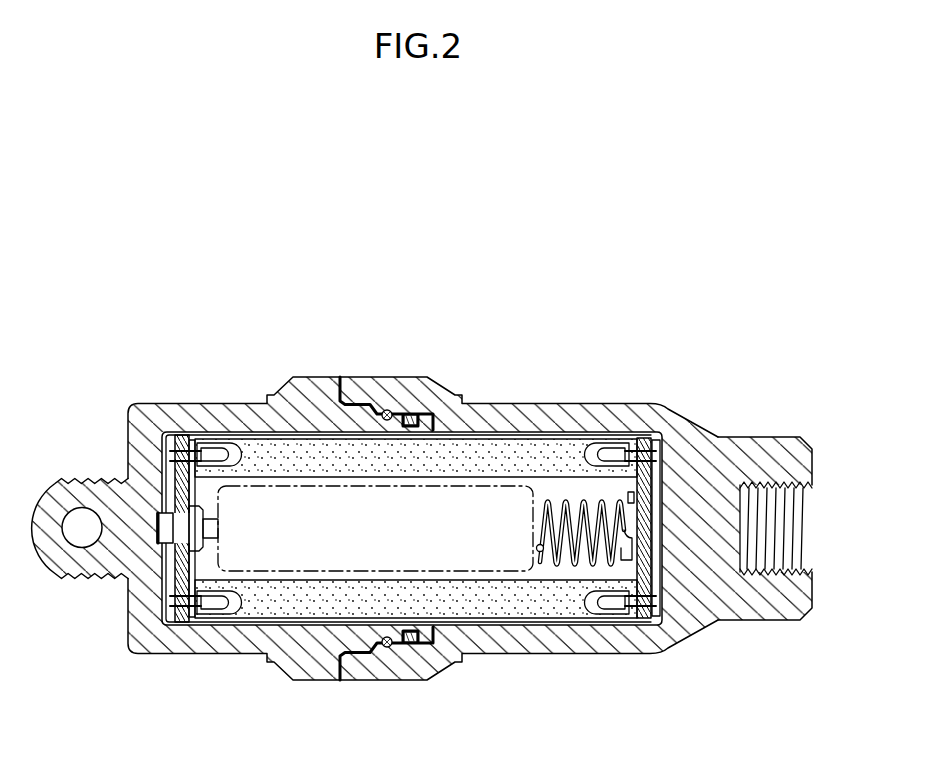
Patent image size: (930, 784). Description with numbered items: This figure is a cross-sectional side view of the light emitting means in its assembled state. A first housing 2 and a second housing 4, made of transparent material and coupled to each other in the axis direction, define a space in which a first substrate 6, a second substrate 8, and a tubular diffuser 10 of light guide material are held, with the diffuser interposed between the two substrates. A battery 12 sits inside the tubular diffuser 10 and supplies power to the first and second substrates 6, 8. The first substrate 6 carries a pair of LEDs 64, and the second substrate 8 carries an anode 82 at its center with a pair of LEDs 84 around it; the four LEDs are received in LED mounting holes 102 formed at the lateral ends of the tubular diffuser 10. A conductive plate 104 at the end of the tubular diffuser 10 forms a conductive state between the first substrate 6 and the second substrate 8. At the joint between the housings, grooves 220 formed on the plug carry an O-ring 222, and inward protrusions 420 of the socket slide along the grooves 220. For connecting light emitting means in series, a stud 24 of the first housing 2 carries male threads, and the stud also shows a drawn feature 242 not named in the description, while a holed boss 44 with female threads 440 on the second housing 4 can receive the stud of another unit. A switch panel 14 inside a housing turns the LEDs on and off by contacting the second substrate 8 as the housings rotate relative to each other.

The first housing 2 is at (177, 403).
The second housing 4 is at (557, 412).
The first substrate 6 is at (644, 441).
The second substrate 8 is at (175, 432).
The tubular diffuser 10 is at (513, 455).
The battery 12 is at (360, 487).
The switch panel 14 is at (685, 560).
The stud 24 is at (85, 482).
The holed boss 44 is at (760, 437).
The LEDs 64 is at (608, 604).
The anode 82 is at (172, 532).
The LEDs 84 is at (213, 452).
The LED mounting holes 102 is at (222, 432).
The conductive plate 104 is at (193, 493).
The grooves 220 is at (433, 418).
The O-ring 222 is at (388, 410).
The mounting hole 242 is at (88, 535).
The inward protrusions 420 is at (412, 418).
The female threads 440 is at (800, 497).